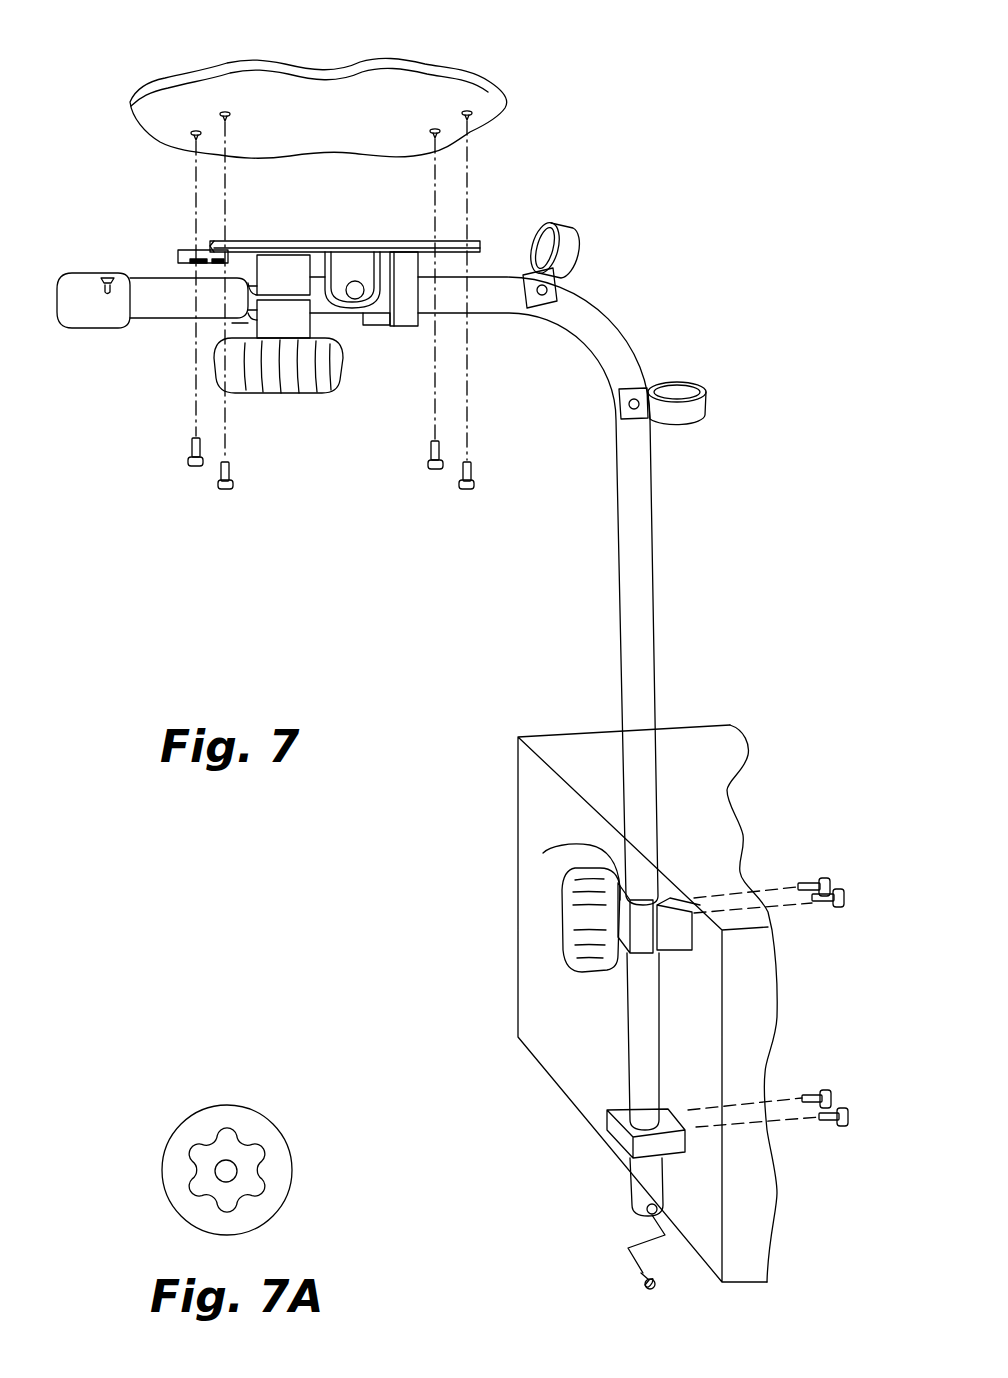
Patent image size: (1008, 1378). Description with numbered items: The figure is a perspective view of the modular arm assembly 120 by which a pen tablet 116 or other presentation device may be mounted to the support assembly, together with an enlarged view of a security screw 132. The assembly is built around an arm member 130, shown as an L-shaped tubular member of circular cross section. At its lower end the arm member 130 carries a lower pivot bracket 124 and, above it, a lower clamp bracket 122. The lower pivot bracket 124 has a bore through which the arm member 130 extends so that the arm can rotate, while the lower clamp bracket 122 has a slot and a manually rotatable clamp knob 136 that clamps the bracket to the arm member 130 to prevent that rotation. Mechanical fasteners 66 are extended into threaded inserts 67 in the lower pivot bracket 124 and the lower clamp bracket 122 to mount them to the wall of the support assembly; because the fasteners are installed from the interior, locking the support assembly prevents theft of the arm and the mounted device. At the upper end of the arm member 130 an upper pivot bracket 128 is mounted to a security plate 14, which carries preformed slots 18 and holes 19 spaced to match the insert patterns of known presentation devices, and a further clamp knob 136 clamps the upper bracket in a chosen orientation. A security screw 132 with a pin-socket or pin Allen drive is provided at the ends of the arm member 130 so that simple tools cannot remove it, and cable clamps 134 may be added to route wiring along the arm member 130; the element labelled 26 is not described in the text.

In FIG. 7, the modular arm assembly 120 is at (749, 84).
In FIG. 7, the pen tablet 116 is at (485, 97).
In FIG. 7, the threaded inserts 67 is at (226, 118).
In FIG. 7, the mechanical fasteners 66 is at (188, 460).
In FIG. 7, the security plate 14 is at (177, 256).
In FIG. 7, the preformed slots 18 is at (165, 325).
In FIG. 7, the preformed holes 19 is at (227, 255).
In FIG. 7, the security screw 132 is at (107, 273).
In FIG. 7A, the security screw 132 is at (226, 1107).
In FIG. 7, the slider block 26 is at (317, 323).
In FIG. 7, the upper pivot bracket 128 is at (402, 326).
In FIG. 7, the clamp knob 136 is at (278, 390).
In FIG. 7, the arm member 130 is at (645, 545).
In FIG. 7, the cable clamps 134 is at (565, 221).
In FIG. 7, the lower clamp bracket 122 is at (543, 853).
In FIG. 7, the lower pivot bracket 124 is at (617, 1133).